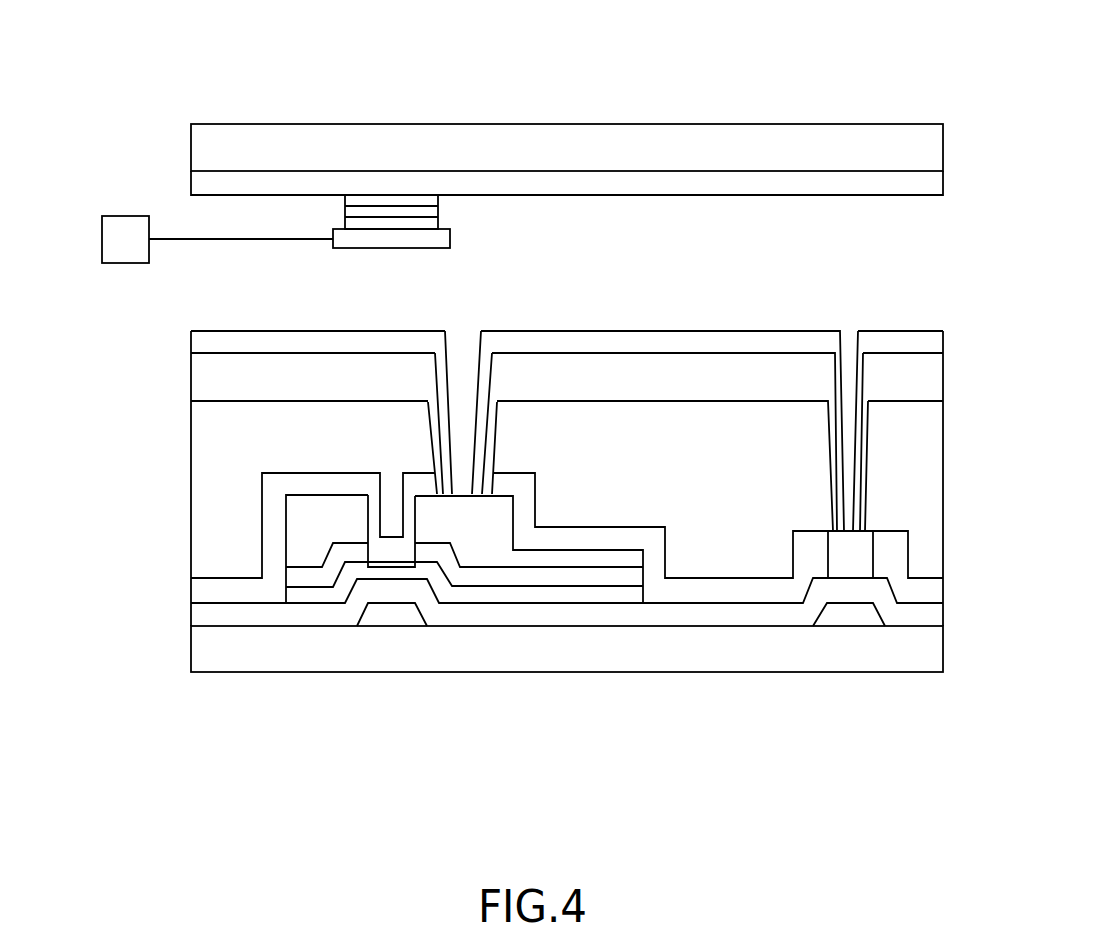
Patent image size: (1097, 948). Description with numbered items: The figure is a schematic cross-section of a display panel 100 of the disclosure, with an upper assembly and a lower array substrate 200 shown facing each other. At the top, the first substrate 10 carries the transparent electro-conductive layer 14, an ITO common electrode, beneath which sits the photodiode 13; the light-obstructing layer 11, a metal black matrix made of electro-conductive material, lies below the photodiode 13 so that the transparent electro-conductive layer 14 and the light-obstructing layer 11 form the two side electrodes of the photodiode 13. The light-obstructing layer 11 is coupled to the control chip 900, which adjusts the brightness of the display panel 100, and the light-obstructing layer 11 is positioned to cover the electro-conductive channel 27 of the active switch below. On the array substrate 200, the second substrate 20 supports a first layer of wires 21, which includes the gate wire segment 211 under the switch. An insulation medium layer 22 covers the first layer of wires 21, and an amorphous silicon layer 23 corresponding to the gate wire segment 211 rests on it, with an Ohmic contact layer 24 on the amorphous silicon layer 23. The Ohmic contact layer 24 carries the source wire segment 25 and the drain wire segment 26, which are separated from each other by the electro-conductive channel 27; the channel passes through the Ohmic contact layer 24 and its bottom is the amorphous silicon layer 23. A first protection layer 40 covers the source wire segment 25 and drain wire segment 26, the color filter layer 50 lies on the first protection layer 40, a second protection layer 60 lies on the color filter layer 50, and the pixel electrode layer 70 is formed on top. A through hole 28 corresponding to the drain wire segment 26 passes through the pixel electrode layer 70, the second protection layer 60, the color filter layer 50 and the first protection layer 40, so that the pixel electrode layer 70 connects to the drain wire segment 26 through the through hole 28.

The display device 100 is at (723, 107).
The first substrate 10 is at (215, 142).
The transparent electro-conductive layer 14 is at (205, 178).
The photodiode 13 is at (440, 212).
The light-obstructing layer 11 is at (397, 233).
The control chip 900 is at (136, 252).
The array substrate 200 is at (412, 697).
The second substrate 20 is at (208, 653).
The insulation medium layer 22 is at (205, 612).
The gate wire segment 211 is at (408, 615).
The first layer of wires 21 is at (870, 612).
The amorphous silicon layer 23 is at (312, 593).
The Ohmic contact layer 24 is at (357, 548).
The source wire segment 25 is at (343, 510).
The drain wire segment 26 is at (505, 527).
The electro-conductive channel 27 is at (398, 568).
The through hole 28 is at (462, 494).
The first protection layer 40 is at (283, 478).
The color filter layer 50 is at (270, 440).
The second protection layer 60 is at (238, 378).
The pixel electrode layer 70 is at (230, 338).